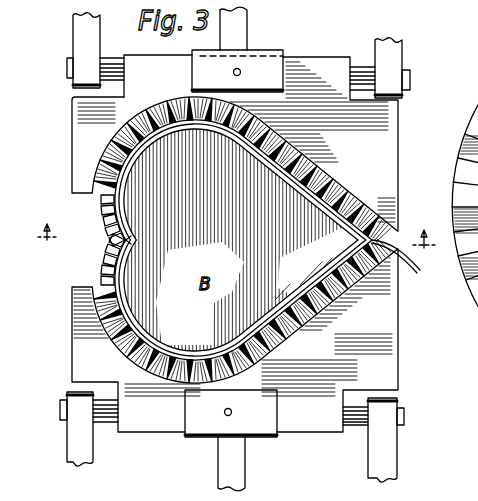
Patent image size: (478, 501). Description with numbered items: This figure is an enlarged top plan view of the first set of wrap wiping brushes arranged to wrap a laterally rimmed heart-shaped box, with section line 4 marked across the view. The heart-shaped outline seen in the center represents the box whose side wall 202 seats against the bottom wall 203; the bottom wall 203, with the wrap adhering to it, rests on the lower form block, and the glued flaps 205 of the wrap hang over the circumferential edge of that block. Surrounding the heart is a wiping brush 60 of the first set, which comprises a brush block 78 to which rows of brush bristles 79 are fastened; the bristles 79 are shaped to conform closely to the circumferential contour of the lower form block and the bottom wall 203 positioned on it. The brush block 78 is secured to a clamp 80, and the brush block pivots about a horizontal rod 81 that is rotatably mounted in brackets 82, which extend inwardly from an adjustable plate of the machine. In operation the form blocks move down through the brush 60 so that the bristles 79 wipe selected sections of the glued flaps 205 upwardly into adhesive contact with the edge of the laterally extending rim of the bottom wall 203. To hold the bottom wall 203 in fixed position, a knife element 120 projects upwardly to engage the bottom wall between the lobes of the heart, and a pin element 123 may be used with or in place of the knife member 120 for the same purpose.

The wiping brush 60 is at (404, 134).
The brush block 78 is at (386, 110).
The brush bristles 79 is at (338, 184).
The clamp 80 is at (268, 58).
The horizontal rod 81 is at (108, 62).
The bracket 82 is at (82, 35).
The knife element 120 is at (122, 235).
The pin element 123 is at (413, 261).
The box side wall 202 is at (162, 348).
The bottom wall 203 is at (243, 240).
The flaps 205 is at (110, 257).
The section line 4 is at (236, 225).